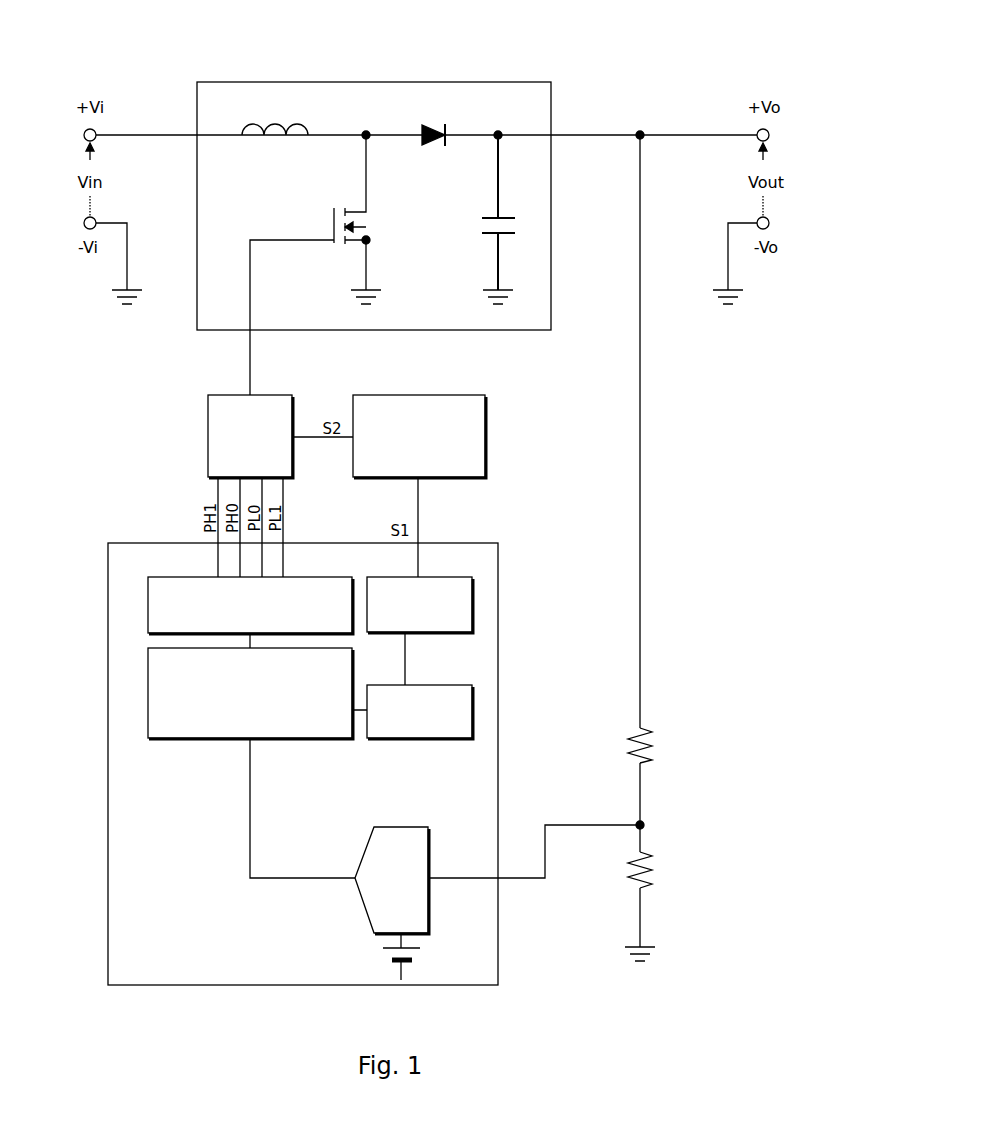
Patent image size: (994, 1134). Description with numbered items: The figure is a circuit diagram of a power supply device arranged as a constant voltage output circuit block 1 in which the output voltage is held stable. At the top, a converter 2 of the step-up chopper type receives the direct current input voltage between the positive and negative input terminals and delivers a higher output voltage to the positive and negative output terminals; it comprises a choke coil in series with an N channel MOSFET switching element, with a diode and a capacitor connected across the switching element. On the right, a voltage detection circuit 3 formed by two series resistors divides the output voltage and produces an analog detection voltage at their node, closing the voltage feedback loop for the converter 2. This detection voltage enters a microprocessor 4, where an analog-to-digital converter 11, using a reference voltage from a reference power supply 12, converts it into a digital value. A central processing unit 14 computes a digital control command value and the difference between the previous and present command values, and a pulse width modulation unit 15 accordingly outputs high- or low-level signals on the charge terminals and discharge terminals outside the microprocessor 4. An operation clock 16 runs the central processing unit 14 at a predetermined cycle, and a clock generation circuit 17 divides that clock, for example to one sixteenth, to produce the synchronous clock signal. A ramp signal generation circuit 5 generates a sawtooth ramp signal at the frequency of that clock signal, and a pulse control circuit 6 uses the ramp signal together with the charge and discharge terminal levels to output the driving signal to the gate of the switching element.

The constant voltage output circuit block 1 is at (676, 68).
The converter 2 is at (513, 82).
The voltage detection circuit 3 is at (664, 731).
The microprocessor 4 is at (374, 802).
The ramp signal generation circuit 5 is at (465, 393).
The pulse control circuit 6 is at (278, 393).
The analog-to-digital converter 11 is at (397, 827).
The reference power supply 12 is at (418, 955).
The central processing unit 14 is at (175, 738).
The pulse width modulation unit 15 is at (195, 577).
The operation clock 16 is at (410, 738).
The clock generation circuit 17 is at (410, 632).